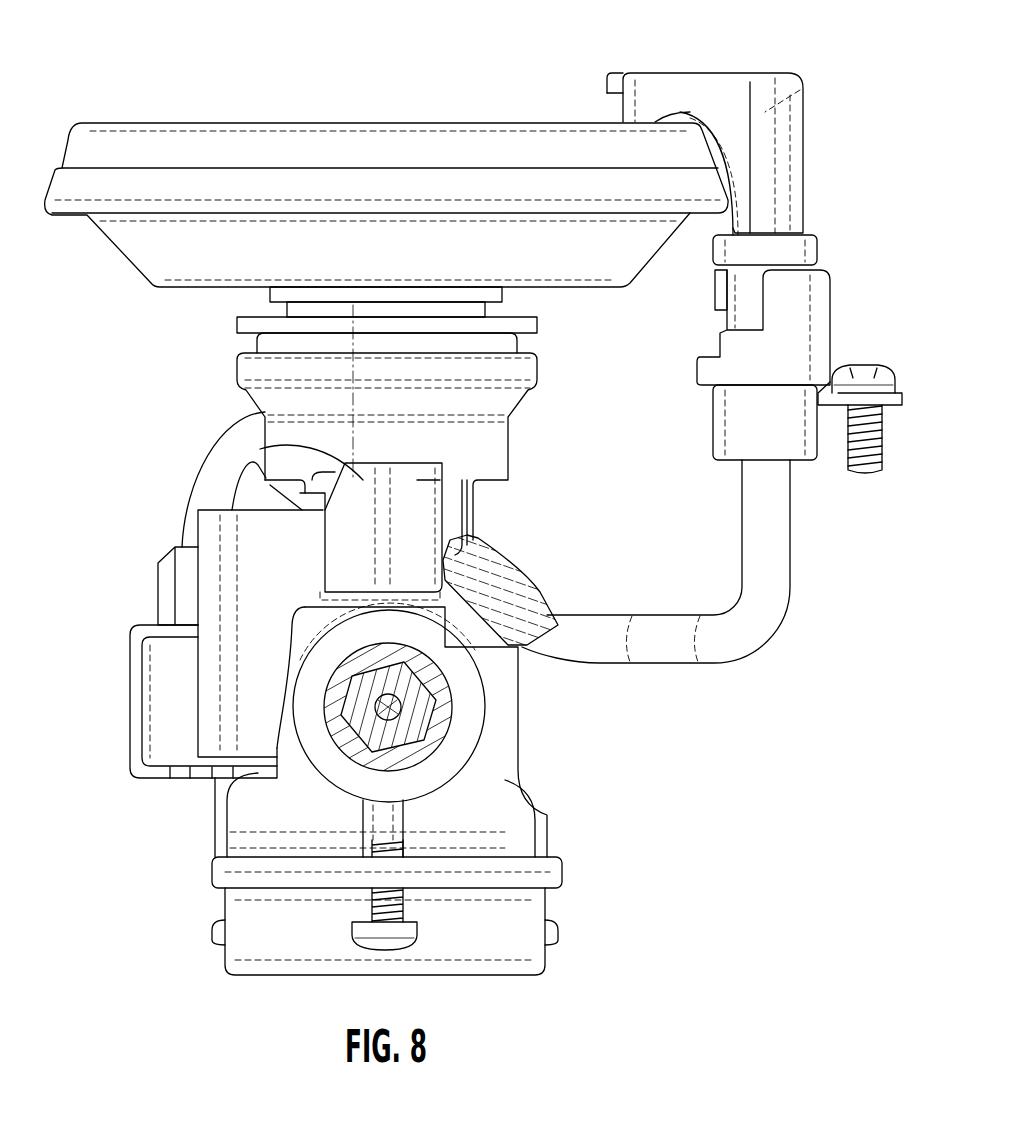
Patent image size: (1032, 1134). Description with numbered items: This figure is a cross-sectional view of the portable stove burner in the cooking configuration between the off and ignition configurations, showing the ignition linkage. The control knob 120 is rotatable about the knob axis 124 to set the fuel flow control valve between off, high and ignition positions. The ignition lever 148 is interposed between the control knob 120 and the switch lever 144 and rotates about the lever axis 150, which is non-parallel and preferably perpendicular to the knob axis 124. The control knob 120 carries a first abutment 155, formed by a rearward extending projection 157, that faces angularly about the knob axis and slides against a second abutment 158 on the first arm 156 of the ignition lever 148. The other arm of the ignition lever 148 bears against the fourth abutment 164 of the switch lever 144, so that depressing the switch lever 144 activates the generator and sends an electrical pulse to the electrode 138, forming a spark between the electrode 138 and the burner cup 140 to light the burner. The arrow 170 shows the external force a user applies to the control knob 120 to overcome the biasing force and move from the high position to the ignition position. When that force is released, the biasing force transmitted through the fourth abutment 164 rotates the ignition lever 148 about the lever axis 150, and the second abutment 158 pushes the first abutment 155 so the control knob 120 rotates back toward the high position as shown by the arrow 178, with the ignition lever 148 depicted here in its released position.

The electrode 138 is at (605, 83).
The burner cup 140 is at (445, 123).
The lever axis 150 is at (353, 368).
The ignition lever 148 is at (260, 449).
The first arm 156 is at (417, 482).
The second abutment 158 is at (447, 480).
The first abutment 155 is at (440, 560).
The rearward extending projection 157 is at (517, 590).
The arrow (external force) 170 is at (352, 665).
The control knob 120 is at (427, 677).
The knob axis 124 is at (395, 713).
The arrow (knob rotation) 178 is at (410, 694).
The switch lever 144 is at (157, 703).
The fourth abutment 164 is at (178, 730).